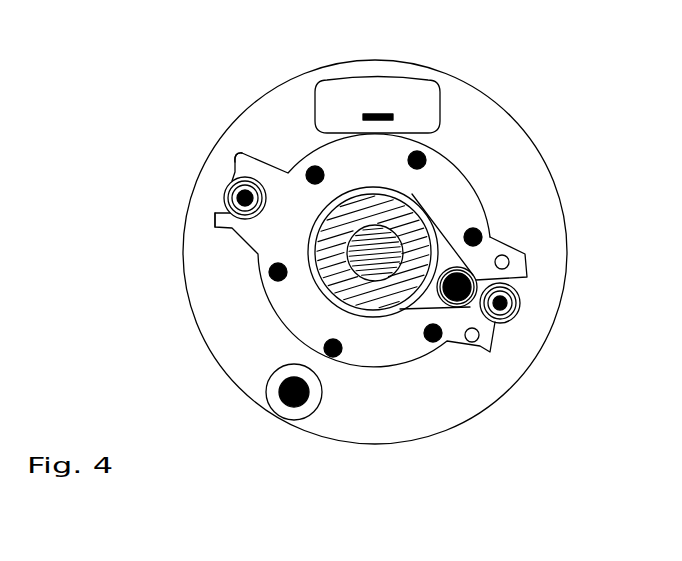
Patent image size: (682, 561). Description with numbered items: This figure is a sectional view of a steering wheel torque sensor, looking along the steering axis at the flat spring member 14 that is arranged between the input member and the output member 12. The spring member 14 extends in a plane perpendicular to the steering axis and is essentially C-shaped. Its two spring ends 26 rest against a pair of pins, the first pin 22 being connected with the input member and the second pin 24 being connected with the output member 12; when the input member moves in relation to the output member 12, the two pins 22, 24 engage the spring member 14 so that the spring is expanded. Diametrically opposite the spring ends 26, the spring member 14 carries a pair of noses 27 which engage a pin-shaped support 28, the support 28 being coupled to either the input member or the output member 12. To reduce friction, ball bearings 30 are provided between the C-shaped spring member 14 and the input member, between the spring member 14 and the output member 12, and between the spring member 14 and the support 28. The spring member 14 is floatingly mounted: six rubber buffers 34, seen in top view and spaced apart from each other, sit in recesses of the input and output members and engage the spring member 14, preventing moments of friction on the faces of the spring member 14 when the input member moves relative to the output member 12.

The output member 12 is at (280, 118).
The spring member 14 is at (442, 200).
The first pin 22 is at (500, 323).
The second pin 24 is at (452, 307).
The spring ends 26 is at (510, 263).
The noses 27 is at (257, 172).
The support 28 is at (223, 180).
The ball bearings 30 is at (485, 280).
The rubber buffers 34 is at (325, 351).